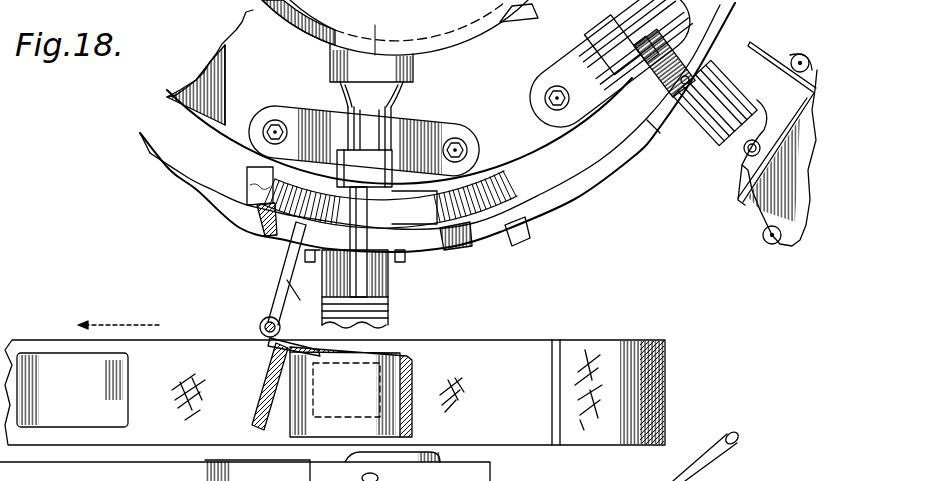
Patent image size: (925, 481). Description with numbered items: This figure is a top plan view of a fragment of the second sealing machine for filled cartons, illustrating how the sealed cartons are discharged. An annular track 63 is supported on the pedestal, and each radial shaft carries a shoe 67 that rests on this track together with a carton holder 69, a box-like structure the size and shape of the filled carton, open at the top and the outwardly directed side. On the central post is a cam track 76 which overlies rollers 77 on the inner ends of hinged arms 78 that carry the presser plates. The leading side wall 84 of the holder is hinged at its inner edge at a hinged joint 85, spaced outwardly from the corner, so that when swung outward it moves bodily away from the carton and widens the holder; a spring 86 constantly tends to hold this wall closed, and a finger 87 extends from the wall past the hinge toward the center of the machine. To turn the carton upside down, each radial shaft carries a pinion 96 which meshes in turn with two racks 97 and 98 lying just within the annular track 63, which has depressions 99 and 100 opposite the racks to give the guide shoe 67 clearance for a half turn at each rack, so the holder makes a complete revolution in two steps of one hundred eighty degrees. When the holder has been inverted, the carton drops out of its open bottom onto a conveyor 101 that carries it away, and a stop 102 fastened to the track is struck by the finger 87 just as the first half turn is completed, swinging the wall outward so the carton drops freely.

The annular track 63 is at (572, 195).
The shoe 67 is at (665, 120).
The carton holder 69 is at (413, 347).
The cam track 76 is at (452, 32).
The rollers 77 is at (333, 62).
The hinged arms 78 is at (387, 290).
The hinged side wall 84 is at (257, 387).
The hinged joint 85 is at (272, 317).
The spring 86 is at (315, 337).
The finger 87 is at (290, 283).
The pinion 96 is at (647, 97).
The rack 97 is at (268, 185).
The rack 98 is at (482, 212).
The depression 99 is at (263, 213).
The depression 100 is at (517, 232).
The conveyor 101 is at (147, 430).
The stop 102 is at (293, 257).